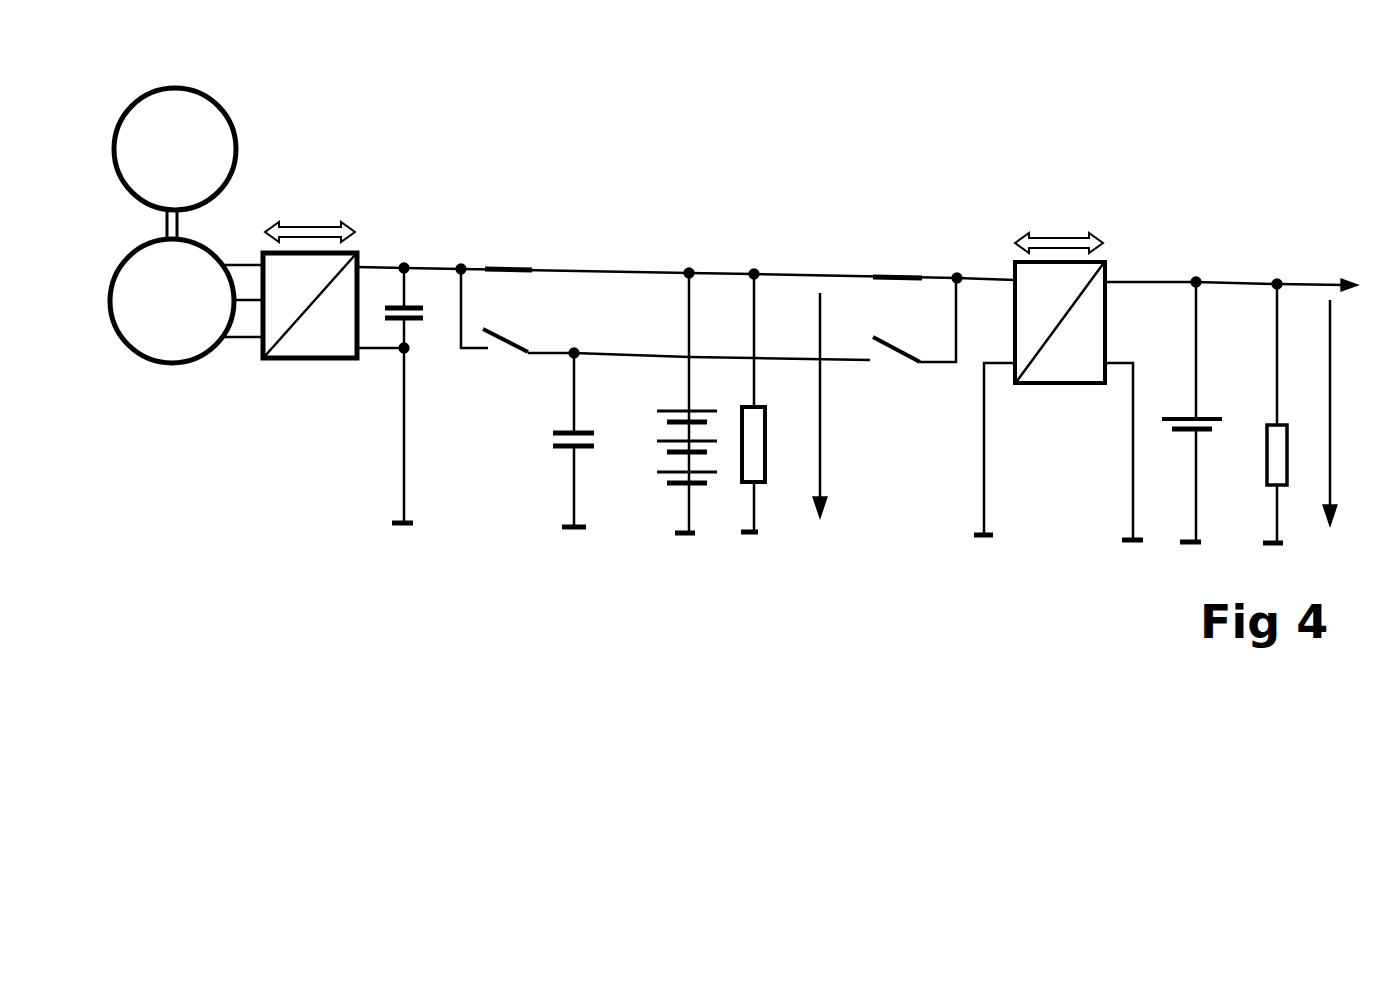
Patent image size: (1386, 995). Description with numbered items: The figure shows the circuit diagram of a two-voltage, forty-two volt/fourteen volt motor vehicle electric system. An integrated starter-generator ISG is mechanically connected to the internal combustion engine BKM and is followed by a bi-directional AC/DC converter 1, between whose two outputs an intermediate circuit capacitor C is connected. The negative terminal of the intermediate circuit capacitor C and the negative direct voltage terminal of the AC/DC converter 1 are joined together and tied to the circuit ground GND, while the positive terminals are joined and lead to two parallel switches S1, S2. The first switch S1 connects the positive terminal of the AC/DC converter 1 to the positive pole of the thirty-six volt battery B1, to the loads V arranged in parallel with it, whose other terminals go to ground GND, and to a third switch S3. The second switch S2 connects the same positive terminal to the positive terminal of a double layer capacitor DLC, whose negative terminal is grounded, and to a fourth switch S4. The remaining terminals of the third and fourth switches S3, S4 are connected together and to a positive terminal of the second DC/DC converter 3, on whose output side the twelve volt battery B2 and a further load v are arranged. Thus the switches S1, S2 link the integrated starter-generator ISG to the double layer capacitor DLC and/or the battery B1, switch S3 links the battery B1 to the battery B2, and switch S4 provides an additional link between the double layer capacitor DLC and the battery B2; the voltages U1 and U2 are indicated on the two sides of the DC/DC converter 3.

The AC/DC converter 1 is at (312, 358).
The DC/DC converter 3 is at (1046, 370).
The internal combustion engine BKM is at (206, 169).
The integrated starter-generator ISG is at (200, 317).
The intermediate circuit capacitor C is at (394, 326).
The first switch S1 is at (508, 253).
The second switch S2 is at (494, 330).
The third switch S3 is at (897, 261).
The fourth switch S4 is at (914, 338).
The double layer capacitor DLC is at (551, 440).
The 36 V battery B1 is at (705, 508).
The 12 V battery B2 is at (1210, 396).
The loads V is at (767, 403).
The load v is at (1270, 413).
The voltage U1 is at (842, 405).
The voltage U2 is at (1348, 413).
The circuit ground GND is at (986, 472).